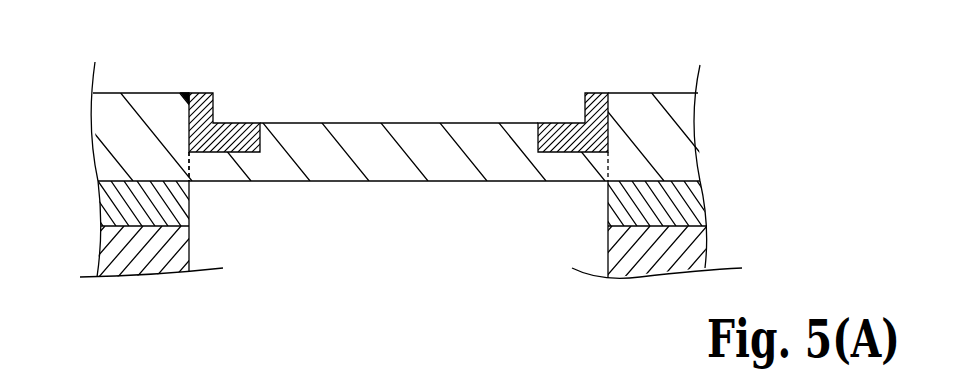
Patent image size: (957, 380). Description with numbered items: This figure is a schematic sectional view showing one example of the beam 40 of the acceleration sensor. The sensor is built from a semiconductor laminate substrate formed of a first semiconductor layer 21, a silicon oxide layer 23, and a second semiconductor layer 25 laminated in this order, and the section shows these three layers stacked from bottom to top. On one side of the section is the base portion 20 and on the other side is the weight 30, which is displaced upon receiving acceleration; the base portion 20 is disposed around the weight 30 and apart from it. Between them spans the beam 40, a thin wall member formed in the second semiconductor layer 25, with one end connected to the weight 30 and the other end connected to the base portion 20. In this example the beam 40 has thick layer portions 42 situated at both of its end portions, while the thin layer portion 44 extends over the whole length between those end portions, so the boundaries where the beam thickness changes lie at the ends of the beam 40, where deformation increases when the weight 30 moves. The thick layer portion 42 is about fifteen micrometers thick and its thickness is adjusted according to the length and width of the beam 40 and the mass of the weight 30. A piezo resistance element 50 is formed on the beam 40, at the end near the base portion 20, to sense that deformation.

The base portion 20 is at (95, 315).
The first semiconductor layer 21 is at (690, 244).
The silicon oxide layer 23 is at (678, 200).
The second semiconductor layer 25 is at (692, 150).
The weight 30 is at (608, 314).
The beam 40 is at (608, 314).
The thick layer portion 42 is at (190, 75).
The thin layer portion 44 is at (585, 75).
The piezo resistance element 50 is at (186, 93).